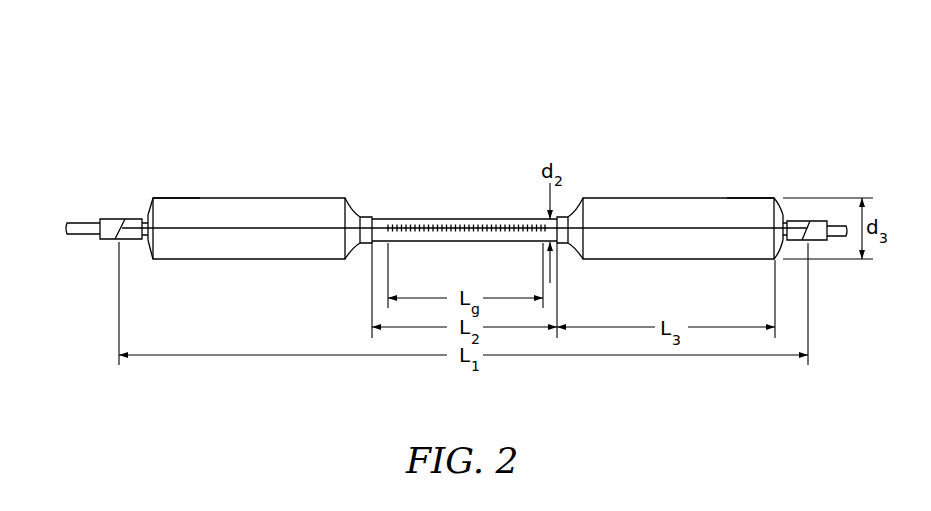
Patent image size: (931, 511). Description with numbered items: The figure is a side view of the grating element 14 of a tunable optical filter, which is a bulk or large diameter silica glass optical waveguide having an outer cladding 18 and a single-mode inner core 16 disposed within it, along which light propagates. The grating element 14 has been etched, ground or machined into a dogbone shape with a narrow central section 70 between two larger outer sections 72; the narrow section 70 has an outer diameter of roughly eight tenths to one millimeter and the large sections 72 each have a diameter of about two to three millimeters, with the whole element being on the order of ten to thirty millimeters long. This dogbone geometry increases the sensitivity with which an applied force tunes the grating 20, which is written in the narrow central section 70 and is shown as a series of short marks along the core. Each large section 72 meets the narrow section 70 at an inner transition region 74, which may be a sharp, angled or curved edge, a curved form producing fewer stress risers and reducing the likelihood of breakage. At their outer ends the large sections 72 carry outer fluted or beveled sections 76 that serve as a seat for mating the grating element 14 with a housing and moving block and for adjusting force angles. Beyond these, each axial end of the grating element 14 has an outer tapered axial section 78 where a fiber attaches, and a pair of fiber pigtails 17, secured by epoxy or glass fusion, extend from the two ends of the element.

The grating element 14 is at (559, 126).
The inner core 16 is at (246, 228).
The pigtails 17 is at (78, 222).
The outer cladding 18 is at (661, 212).
The grating 20 is at (454, 228).
The narrow central section 70 is at (396, 218).
The large outer sections 72 is at (186, 198).
The inner transition region 74 is at (350, 210).
The outer fluted sections 76 is at (150, 205).
The outer tapered axial section 78 is at (125, 243).